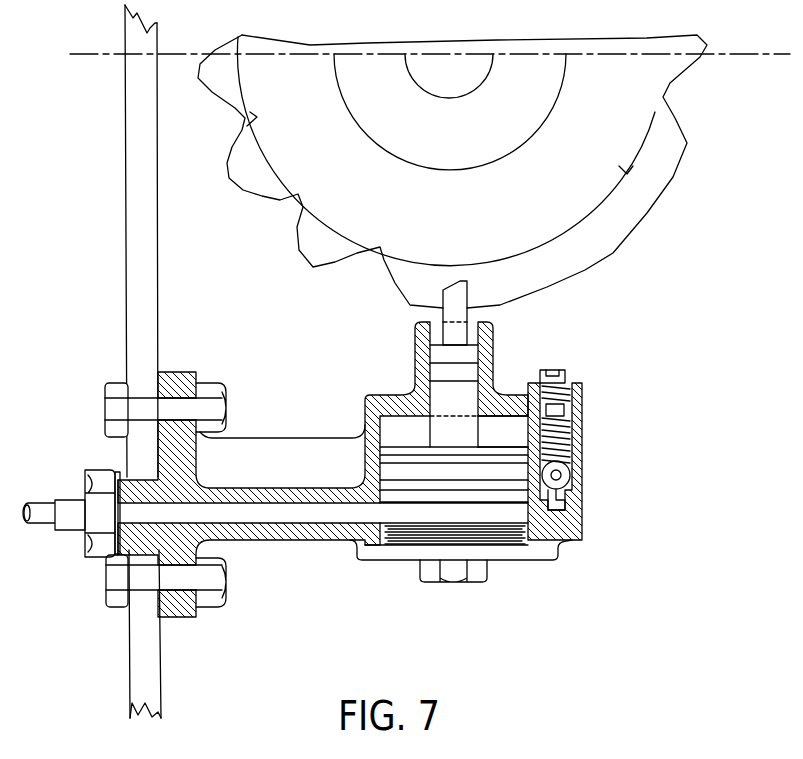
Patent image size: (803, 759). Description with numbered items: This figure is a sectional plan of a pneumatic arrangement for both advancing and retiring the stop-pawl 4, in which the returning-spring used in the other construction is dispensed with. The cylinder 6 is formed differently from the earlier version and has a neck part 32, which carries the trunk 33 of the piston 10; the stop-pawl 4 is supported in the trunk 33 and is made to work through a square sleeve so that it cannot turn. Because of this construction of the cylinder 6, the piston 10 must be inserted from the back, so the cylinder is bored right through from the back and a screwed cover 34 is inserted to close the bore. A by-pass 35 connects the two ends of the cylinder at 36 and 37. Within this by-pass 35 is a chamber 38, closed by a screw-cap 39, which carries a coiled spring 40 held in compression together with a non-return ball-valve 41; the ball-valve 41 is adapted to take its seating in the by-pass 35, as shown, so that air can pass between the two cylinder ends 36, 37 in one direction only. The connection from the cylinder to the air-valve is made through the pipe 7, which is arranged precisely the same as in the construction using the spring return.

The stop-pawl 4 is at (467, 290).
The cylinder 6 is at (365, 415).
The pipe 7 is at (290, 517).
The piston 10 is at (454, 492).
The neck part 32 is at (495, 350).
The trunk 33 is at (454, 420).
The screwed cover 34 is at (388, 547).
The by-pass 35 is at (553, 498).
The end of cylinder 36 is at (582, 514).
The end of cylinder 37 is at (530, 427).
The chamber 38 is at (572, 432).
The screw-cap 39 is at (565, 377).
The coiled spring 40 is at (565, 410).
The non-return ball-valve 41 is at (582, 475).